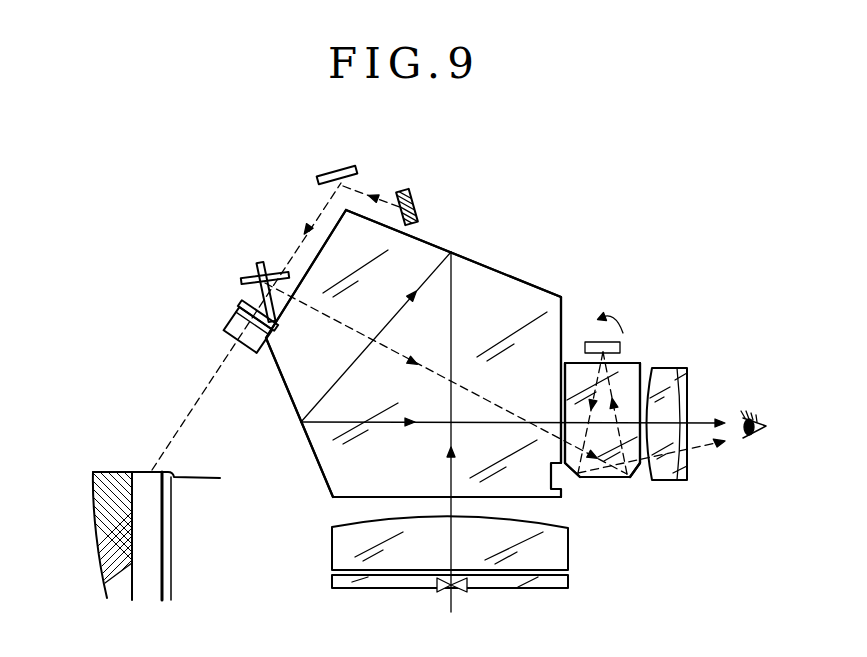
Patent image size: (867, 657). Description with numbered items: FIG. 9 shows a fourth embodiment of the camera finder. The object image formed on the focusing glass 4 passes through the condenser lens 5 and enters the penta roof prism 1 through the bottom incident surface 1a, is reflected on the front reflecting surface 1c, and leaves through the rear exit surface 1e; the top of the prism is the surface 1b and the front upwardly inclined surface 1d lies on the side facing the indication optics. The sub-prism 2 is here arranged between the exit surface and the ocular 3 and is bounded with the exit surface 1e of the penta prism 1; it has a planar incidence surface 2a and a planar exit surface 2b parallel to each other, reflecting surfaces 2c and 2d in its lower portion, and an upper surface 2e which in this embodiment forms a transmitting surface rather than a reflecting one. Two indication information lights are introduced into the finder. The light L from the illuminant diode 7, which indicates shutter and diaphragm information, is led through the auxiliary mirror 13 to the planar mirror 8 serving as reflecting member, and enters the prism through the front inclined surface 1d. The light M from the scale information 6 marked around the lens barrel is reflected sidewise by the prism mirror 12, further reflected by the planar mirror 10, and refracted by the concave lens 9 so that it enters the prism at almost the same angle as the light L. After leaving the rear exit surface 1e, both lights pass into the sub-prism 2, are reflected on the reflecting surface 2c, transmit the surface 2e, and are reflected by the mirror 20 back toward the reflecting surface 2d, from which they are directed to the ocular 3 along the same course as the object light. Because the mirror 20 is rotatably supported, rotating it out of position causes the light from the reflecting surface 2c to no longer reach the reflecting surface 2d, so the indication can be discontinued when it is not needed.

The penta roof prism 1 is at (480, 278).
The bottom incident surface 1a is at (333, 498).
The top inclined face of first prism 1b is at (527, 283).
The front reflecting surface 1c is at (292, 400).
The front inclined surface 1d is at (332, 238).
The rear exit surface 1e is at (563, 305).
The sub-prism 2 is at (603, 478).
The planar incidence surface 2a is at (566, 373).
The planar exit surface 2b is at (643, 375).
The reflecting surface 2c is at (631, 478).
The reflecting surface 2d is at (573, 478).
The upper surface 2e is at (632, 363).
The ocular 3 is at (667, 380).
The focusing glass 4 is at (568, 583).
The condenser lens 5 is at (568, 545).
The informations indicated on the lens barrel 6 is at (152, 470).
The illuminant diode 7 is at (405, 190).
The planar mirror 8 is at (261, 262).
The concave lens 9 is at (241, 300).
The planar mirror 10 is at (247, 276).
The prism mirror 12 is at (225, 330).
The auxiliary mirror 13 is at (340, 170).
The mirror 20 is at (607, 342).
The indication information light L is at (359, 185).
The indication information light M is at (191, 412).